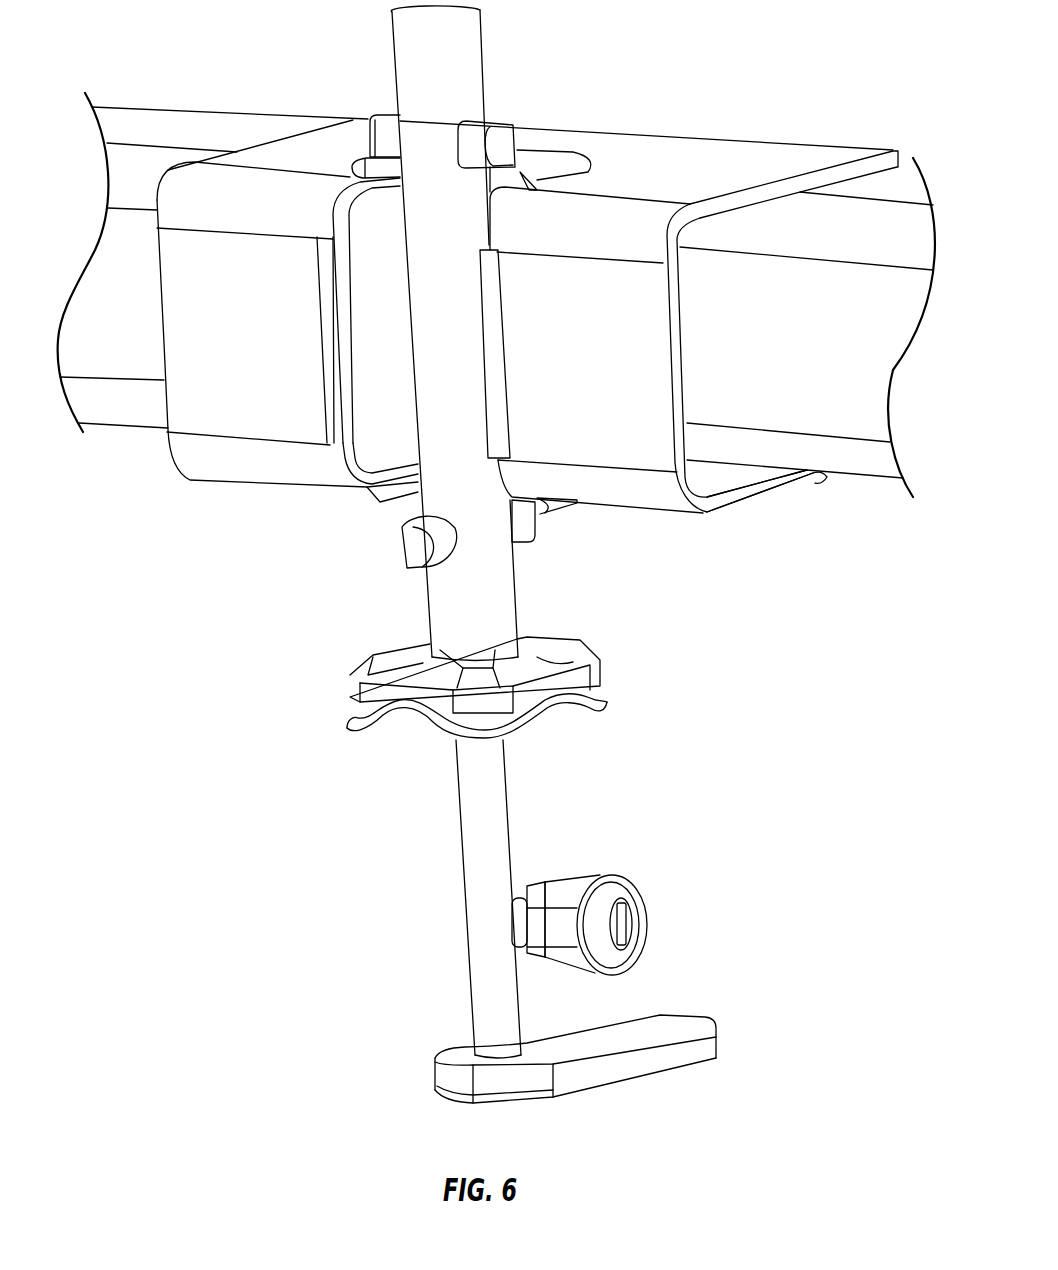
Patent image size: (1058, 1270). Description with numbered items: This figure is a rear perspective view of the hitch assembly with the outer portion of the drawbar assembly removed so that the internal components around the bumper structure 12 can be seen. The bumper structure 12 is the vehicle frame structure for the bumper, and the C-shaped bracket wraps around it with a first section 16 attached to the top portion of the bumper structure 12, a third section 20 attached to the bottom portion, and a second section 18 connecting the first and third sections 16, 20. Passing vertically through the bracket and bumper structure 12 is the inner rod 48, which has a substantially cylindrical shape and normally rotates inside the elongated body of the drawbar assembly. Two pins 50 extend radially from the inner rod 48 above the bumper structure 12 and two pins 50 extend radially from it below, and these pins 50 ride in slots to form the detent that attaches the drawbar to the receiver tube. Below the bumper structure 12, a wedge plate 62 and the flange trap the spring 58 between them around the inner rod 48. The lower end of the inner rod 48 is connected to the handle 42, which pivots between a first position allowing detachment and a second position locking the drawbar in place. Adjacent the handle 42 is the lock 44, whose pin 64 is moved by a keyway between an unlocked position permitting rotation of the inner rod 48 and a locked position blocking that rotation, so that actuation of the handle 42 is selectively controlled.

The bumper structure 12 is at (95, 360).
The first section 16 is at (767, 197).
The second section 18 is at (560, 288).
The third section 20 is at (783, 487).
The handle 42 is at (720, 1033).
The lock 44 is at (632, 918).
The inner rod 48 is at (437, 612).
The pins 50 is at (387, 125).
The spring 58 is at (362, 722).
The wedge plate 62 is at (355, 693).
The pin 64 is at (523, 897).